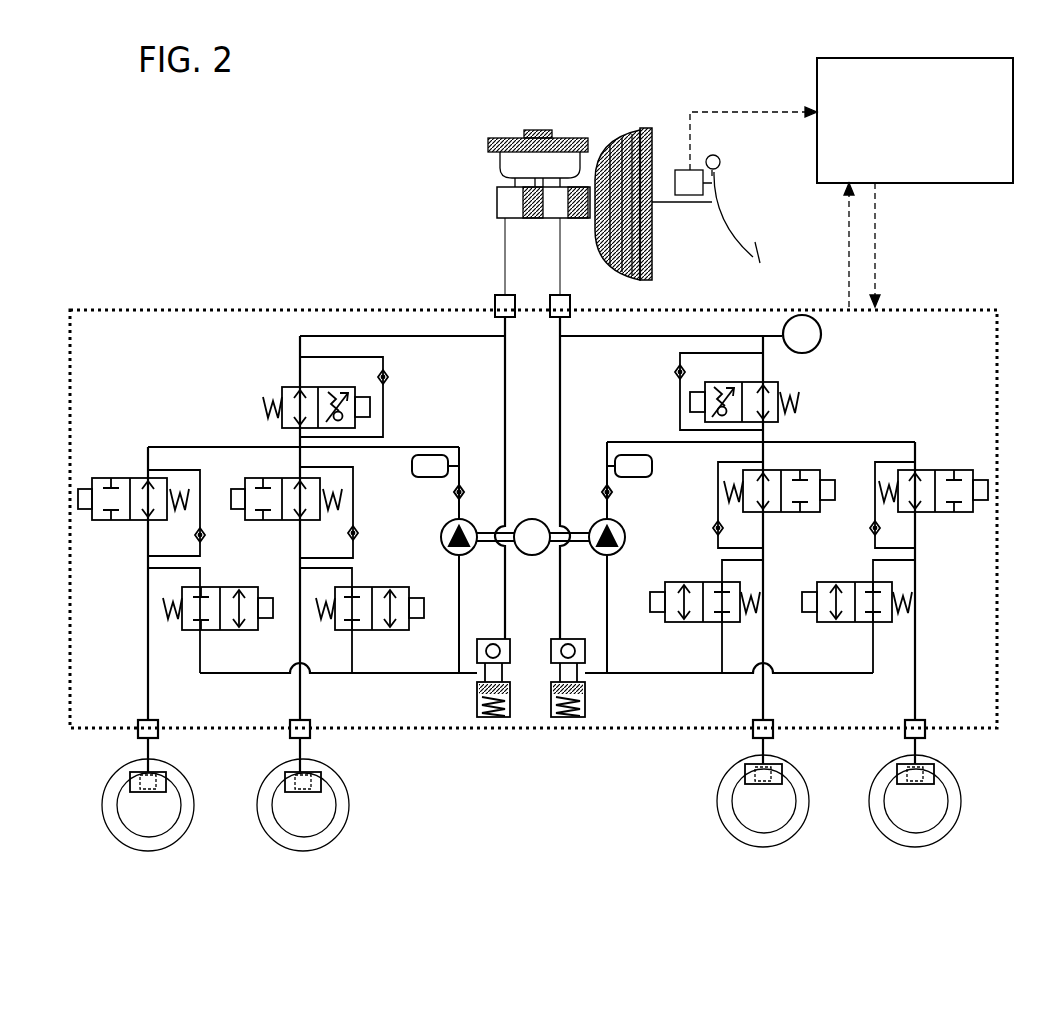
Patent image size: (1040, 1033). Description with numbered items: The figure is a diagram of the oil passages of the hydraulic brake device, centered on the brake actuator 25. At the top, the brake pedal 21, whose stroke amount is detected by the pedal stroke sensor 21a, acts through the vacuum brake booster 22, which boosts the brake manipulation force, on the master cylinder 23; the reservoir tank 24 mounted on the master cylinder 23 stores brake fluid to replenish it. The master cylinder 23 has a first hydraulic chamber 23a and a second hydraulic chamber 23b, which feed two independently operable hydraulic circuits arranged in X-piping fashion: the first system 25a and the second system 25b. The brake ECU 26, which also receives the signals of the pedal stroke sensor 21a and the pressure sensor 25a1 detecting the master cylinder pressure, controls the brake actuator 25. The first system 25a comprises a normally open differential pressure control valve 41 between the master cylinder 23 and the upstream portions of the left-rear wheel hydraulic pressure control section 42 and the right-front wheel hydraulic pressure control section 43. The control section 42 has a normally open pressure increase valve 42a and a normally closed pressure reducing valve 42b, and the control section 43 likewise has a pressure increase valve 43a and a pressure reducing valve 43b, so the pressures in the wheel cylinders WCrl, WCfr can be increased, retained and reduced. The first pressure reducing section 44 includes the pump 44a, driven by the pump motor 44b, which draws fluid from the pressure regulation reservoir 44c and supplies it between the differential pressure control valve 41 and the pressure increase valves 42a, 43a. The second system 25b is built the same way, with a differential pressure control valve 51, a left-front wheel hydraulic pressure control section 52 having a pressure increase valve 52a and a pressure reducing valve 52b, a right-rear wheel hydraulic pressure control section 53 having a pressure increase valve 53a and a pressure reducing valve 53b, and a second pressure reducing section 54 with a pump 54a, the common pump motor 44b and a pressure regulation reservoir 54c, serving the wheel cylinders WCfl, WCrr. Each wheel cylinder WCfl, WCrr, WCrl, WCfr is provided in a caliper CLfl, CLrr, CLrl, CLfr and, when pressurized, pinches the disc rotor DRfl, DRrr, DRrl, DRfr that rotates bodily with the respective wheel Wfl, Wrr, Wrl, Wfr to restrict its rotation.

The brake pedal 21 is at (734, 185).
The pedal stroke sensor 21a is at (694, 172).
The vacuum brake booster 22 is at (628, 130).
The master cylinder 23 is at (512, 194).
The first hydraulic chamber 23a is at (555, 213).
The second hydraulic chamber 23b is at (502, 208).
The reservoir tank 24 is at (535, 128).
The brake actuator 25 is at (937, 308).
The first system 25a is at (697, 326).
The pressure sensor 25a1 is at (822, 332).
The second system 25b is at (340, 328).
The brake ECU 26 is at (930, 58).
The differential pressure control valve 41 is at (775, 382).
The left-rear wheel hydraulic pressure control section 42 is at (743, 580).
The pressure increase valve 42a is at (785, 470).
The pressure reducing valve 42b is at (700, 625).
The right-front wheel hydraulic pressure control section 43 is at (892, 567).
The pressure increase valve 43a is at (935, 468).
The pressure reducing valve 43b is at (858, 625).
The first pressure reducing section 44 is at (601, 613).
The pump 44a is at (627, 537).
The pump motor 44b is at (532, 518).
The pressure regulation reservoir 44c is at (587, 700).
The differential pressure control valve 51 is at (286, 387).
The left-front wheel hydraulic pressure control section 52 is at (177, 576).
The pressure increase valve 52a is at (128, 477).
The pressure reducing valve 52b is at (222, 630).
The right-rear wheel hydraulic pressure control section 53 is at (324, 586).
The pressure increase valve 53a is at (282, 478).
The pressure reducing valve 53b is at (372, 630).
The second pressure reducing section 54 is at (443, 615).
The pump 54a is at (441, 536).
The pressure regulation reservoir 54c is at (477, 700).
The wheel cylinder WCfl is at (140, 767).
The wheel cylinder WCrr is at (297, 767).
The wheel cylinder WCrl is at (752, 763).
The wheel cylinder WCfr is at (906, 763).
The caliper CLfl is at (168, 778).
The caliper CLrr is at (323, 778).
The caliper CLrl is at (784, 775).
The caliper CLfr is at (944, 770).
The wheel Wfl is at (196, 802).
The wheel Wrr is at (351, 802).
The wheel Wrl is at (808, 800).
The wheel Wfr is at (962, 790).
The disc rotor DRfl is at (180, 816).
The disc rotor DRrr is at (335, 816).
The disc rotor DRrl is at (795, 805).
The disc rotor DRfr is at (962, 808).